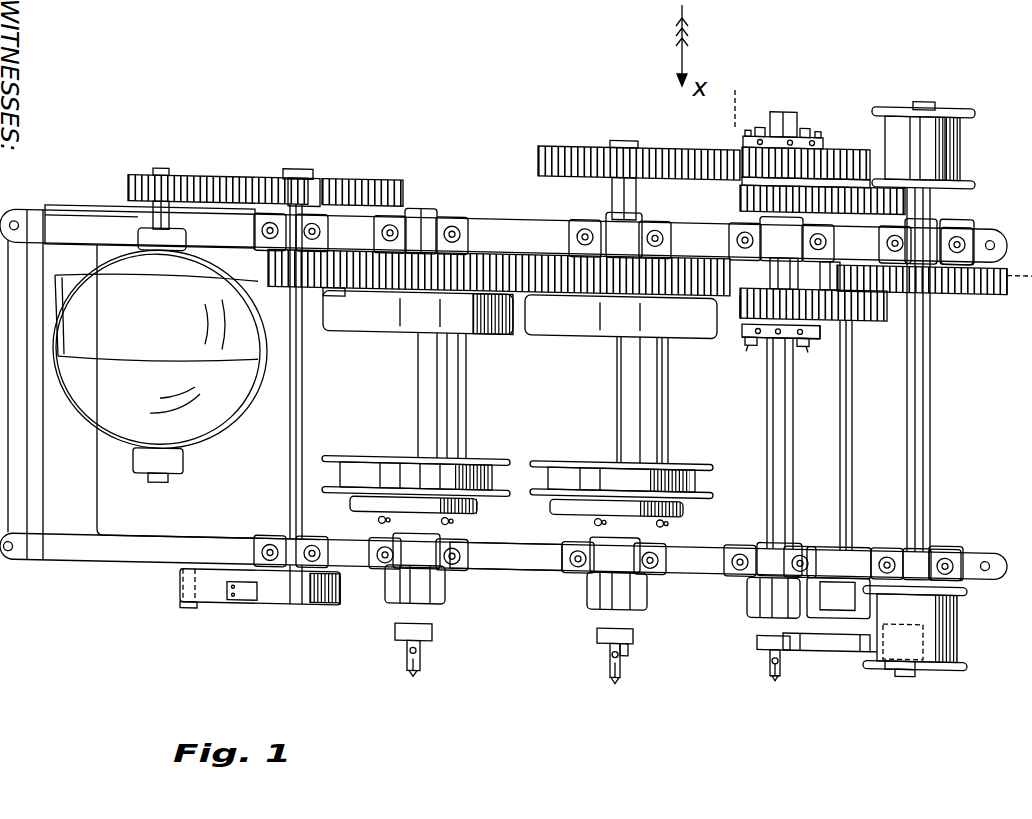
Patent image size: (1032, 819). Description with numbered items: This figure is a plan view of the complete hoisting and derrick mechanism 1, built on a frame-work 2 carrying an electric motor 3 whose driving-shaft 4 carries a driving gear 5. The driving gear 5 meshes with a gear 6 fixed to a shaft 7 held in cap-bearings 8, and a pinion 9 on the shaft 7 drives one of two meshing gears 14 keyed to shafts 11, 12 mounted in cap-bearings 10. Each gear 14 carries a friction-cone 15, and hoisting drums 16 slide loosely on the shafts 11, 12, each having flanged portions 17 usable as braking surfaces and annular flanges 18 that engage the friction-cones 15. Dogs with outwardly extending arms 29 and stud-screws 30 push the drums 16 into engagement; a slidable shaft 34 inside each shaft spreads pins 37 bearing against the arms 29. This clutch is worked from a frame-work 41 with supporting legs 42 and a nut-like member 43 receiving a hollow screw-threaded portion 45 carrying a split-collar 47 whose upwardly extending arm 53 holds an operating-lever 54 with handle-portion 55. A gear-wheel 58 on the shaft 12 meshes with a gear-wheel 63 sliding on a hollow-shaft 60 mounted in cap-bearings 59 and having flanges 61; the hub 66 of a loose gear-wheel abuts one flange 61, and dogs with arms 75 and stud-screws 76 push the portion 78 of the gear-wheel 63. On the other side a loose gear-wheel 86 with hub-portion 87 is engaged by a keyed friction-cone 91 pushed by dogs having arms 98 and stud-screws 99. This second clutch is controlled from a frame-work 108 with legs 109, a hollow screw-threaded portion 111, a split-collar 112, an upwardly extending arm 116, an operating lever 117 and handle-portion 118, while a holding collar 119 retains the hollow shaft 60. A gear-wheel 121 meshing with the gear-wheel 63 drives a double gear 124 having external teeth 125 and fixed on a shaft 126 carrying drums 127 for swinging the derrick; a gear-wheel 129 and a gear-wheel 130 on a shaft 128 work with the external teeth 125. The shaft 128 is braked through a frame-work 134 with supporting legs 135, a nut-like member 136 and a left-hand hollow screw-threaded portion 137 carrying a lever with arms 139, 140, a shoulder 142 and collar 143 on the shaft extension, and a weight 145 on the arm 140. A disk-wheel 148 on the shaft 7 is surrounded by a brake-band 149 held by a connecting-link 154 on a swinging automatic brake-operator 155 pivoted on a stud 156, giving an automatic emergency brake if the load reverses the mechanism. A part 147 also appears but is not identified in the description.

The hoisting and derrick mechanism 1 is at (164, 409).
The frame-work 2 is at (575, 225).
The electric motor 3 is at (225, 430).
The driving-shaft 4 is at (140, 205).
The driving gear 5 is at (140, 172).
The gear 6 is at (375, 172).
The shaft 7 is at (298, 163).
The cap-bearings 8 is at (314, 172).
The pinion 9 is at (330, 292).
The cap-bearings 10 is at (440, 215).
The shaft 11 is at (432, 205).
The shaft 12 is at (612, 186).
The gears 14 is at (480, 248).
The friction-cone 15 is at (357, 300).
The hoisting drums 16 is at (575, 390).
The flanged portions 17 is at (505, 449).
The annular flanges 18 is at (493, 326).
The outwardly extending arms 29 is at (385, 508).
The stud-screws 30 is at (382, 512).
The slidable shaft 34 is at (395, 585).
The pins 37 is at (455, 560).
The frame-work 41 is at (590, 600).
The supporting legs 42 is at (590, 575).
The nut-like member 43 is at (396, 624).
The hollow screw-threaded portion 45 is at (430, 632).
The split-collar 47 is at (628, 640).
The upwardly extending arm 53 is at (423, 650).
The operating-lever 54 is at (410, 662).
The handle-portion 55 is at (418, 664).
The gear-wheel 58 is at (575, 135).
The cap-bearings 59 is at (752, 276).
The hollow-shaft 60 is at (786, 96).
The flanges 61 is at (784, 252).
The gear-wheel 63 is at (748, 136).
The hub 66 is at (740, 186).
The outwardly extending arms 75 is at (760, 112).
The stud-screws 76 is at (748, 115).
The portion of gear-wheel 78 is at (830, 133).
The gear-wheel 86 is at (742, 320).
The hub-portion 87 is at (790, 278).
The friction-cone 91 is at (748, 330).
The outwardly extending arms 98 is at (752, 331).
The stud-screws 99 is at (746, 336).
The frame-work 108 is at (758, 592).
The supporting legs 109 is at (780, 578).
The hollow screw-threaded portion 111 is at (760, 622).
The split-collar 112 is at (770, 627).
The upwardly extending arm 116 is at (775, 648).
The operating lever 117 is at (772, 642).
The handle-portion 118 is at (777, 667).
The holding collar 119 is at (793, 530).
The gear-wheel 121 is at (925, 110).
The double gear 124 is at (950, 276).
The external teeth 125 is at (1000, 278).
The shaft 126 is at (924, 83).
The drums 127 is at (958, 130).
The shaft 128 is at (852, 388).
The gear-wheel 129 is at (822, 314).
The gear-wheel 130 is at (840, 255).
The frame-work 134 is at (870, 582).
The supporting legs 135 is at (933, 532).
The nut-like member 136 is at (800, 635).
The hollow screw-threaded portion 137 is at (873, 640).
The arm 139 is at (796, 640).
The arm 140 is at (882, 652).
The shoulder 142 is at (868, 545).
The collar 143 is at (862, 638).
The weight 145 is at (925, 622).
The bearing 147 is at (948, 212).
The disk-wheel 148 is at (320, 600).
The brake-band 149 is at (338, 602).
The connecting-link 154 is at (243, 598).
The automatic brake-operator 155 is at (210, 563).
The stud 156 is at (180, 577).